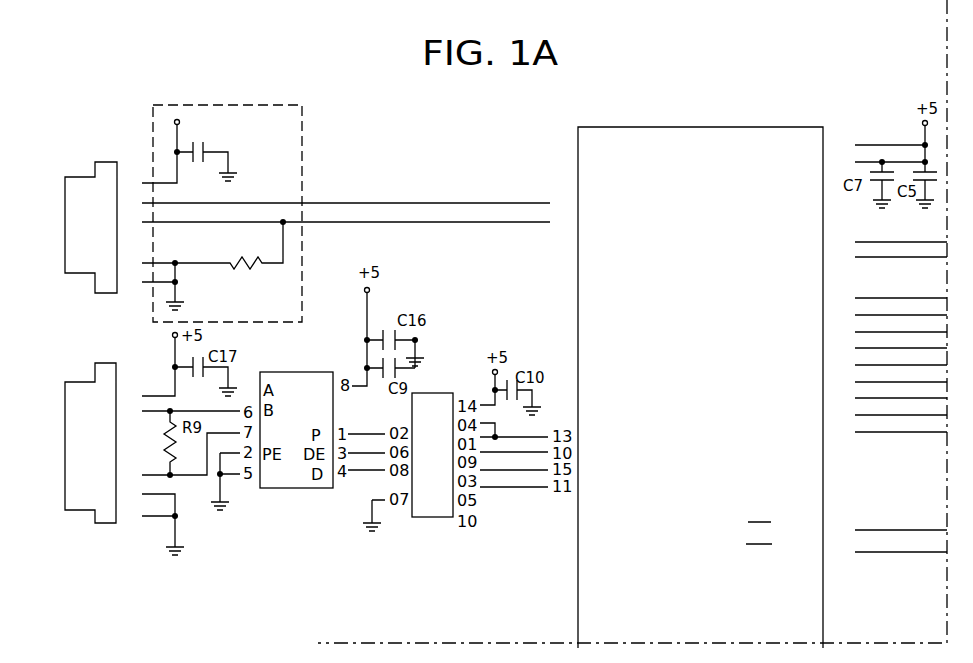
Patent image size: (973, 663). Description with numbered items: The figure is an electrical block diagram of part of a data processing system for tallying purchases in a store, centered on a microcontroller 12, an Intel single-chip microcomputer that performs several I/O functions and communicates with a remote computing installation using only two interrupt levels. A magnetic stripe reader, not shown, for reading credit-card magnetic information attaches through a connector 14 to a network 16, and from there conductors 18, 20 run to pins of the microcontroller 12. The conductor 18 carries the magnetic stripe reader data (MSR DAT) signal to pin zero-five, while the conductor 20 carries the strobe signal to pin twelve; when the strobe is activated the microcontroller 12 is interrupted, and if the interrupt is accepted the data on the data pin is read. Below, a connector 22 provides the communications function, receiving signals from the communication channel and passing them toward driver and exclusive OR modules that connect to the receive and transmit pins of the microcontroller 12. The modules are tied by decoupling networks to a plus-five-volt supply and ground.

The microcontroller 12 is at (625, 127).
The connector 14 is at (110, 162).
The network 16 is at (250, 105).
The conductor 18 is at (373, 203).
The conductor 20 is at (467, 223).
The connector 22 is at (97, 363).